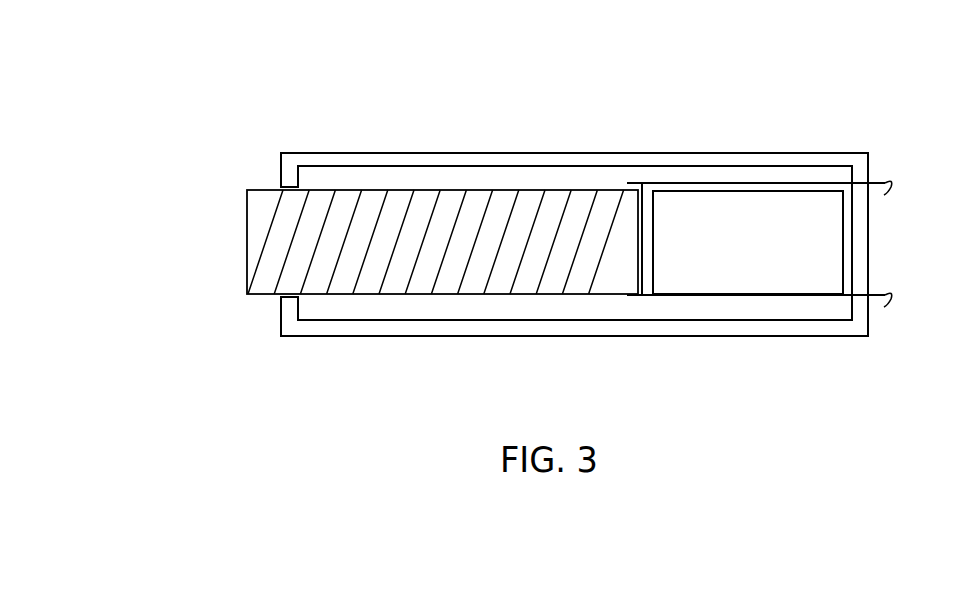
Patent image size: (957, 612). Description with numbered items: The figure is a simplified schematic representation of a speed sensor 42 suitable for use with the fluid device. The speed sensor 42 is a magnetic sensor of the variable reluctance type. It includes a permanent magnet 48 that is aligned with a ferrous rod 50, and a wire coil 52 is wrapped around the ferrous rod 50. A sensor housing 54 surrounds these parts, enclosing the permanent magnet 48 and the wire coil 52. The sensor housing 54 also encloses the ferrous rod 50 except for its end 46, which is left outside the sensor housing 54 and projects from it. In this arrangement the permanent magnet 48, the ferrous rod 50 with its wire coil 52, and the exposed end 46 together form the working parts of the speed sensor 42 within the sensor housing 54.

The speed sensor 42 is at (313, 70).
The end of the ferrous rod 46 is at (247, 223).
The permanent magnet 48 is at (742, 210).
The ferrous rod 50 is at (615, 277).
The wire coil 52 is at (540, 230).
The sensor housing 54 is at (605, 153).